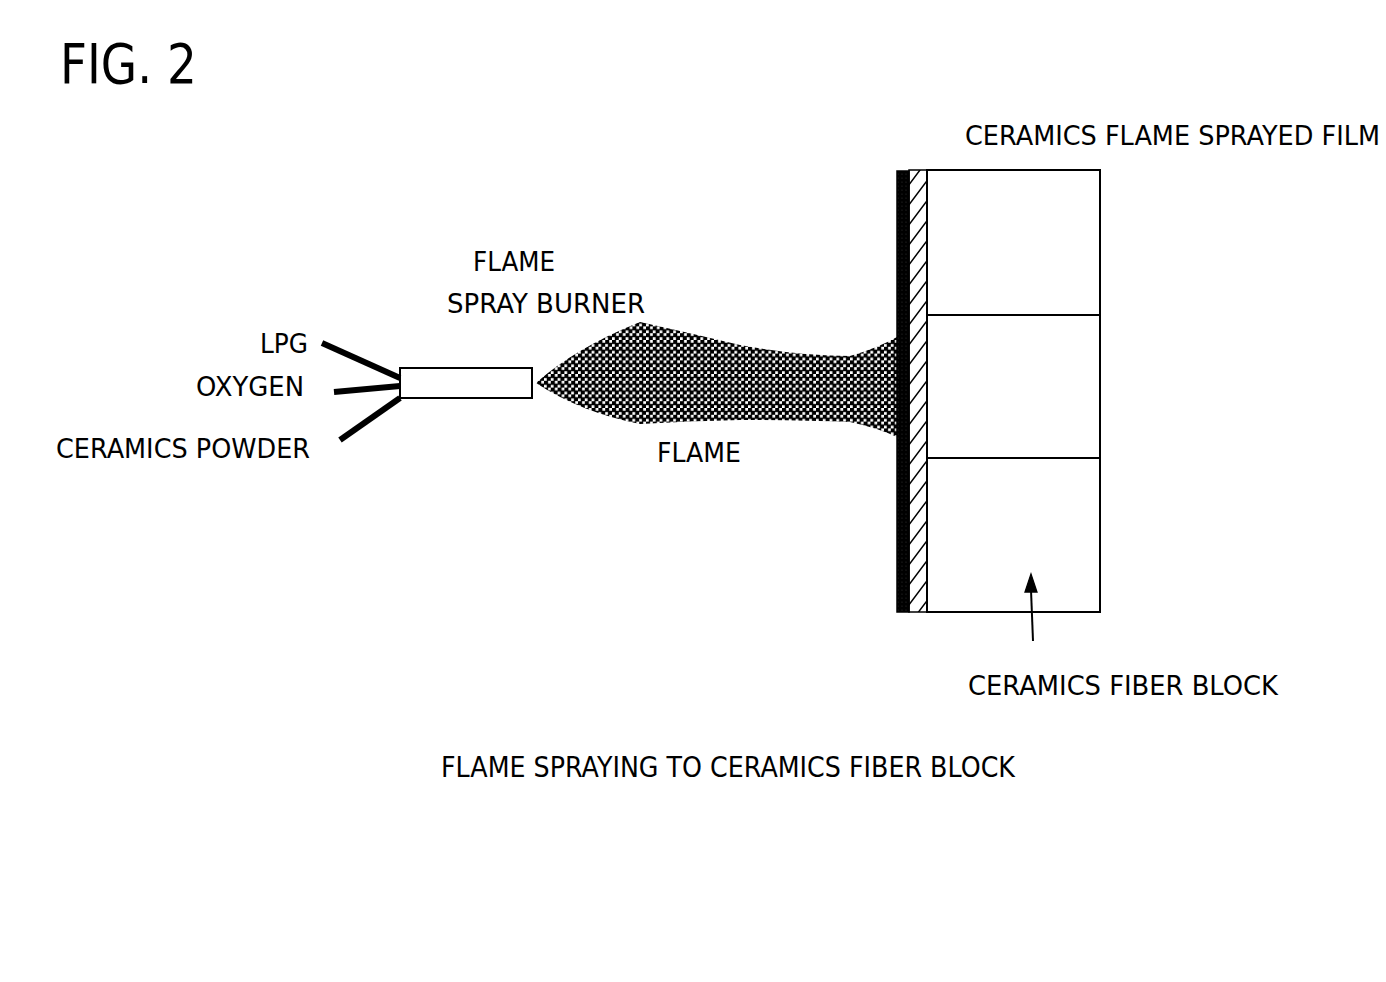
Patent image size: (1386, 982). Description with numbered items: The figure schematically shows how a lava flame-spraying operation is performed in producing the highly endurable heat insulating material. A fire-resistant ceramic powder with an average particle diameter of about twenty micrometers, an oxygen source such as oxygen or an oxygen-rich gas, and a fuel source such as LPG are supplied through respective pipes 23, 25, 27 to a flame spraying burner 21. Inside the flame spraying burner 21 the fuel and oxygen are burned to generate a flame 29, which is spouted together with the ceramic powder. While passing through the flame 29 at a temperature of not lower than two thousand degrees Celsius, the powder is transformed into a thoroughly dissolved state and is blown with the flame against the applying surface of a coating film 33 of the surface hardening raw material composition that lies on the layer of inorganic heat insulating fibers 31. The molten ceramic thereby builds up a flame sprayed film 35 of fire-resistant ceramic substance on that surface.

The flame spraying burner 21 is at (468, 388).
The pipe 23 is at (344, 345).
The pipe 25 is at (372, 374).
The pipe 27 is at (371, 425).
The flame 29 is at (770, 343).
The layer of inorganic heat insulating fibers 31 is at (1080, 278).
The coating film 33 is at (915, 612).
The flame sprayed film 35 is at (897, 177).